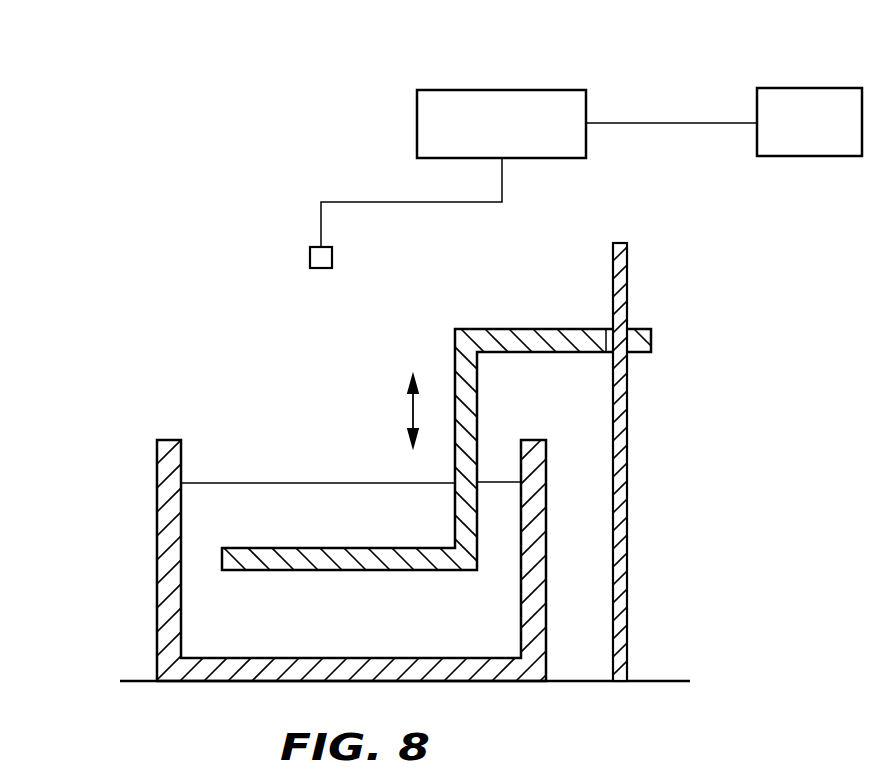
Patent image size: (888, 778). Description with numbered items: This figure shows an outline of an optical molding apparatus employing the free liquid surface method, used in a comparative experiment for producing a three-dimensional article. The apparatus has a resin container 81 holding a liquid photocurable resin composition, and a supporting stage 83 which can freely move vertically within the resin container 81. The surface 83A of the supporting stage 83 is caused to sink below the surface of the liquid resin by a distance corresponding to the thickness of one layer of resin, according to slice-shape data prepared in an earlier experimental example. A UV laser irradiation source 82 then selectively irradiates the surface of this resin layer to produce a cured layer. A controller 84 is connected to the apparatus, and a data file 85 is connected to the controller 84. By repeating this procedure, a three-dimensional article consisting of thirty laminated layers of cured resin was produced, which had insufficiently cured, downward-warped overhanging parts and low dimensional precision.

The resin container 81 is at (546, 546).
The UV laser irradiation source 82 is at (332, 258).
The supporting stage 83 is at (250, 546).
The surface of the supporting stage 83A is at (343, 546).
The controller 84 is at (488, 90).
The data file 85 is at (787, 88).